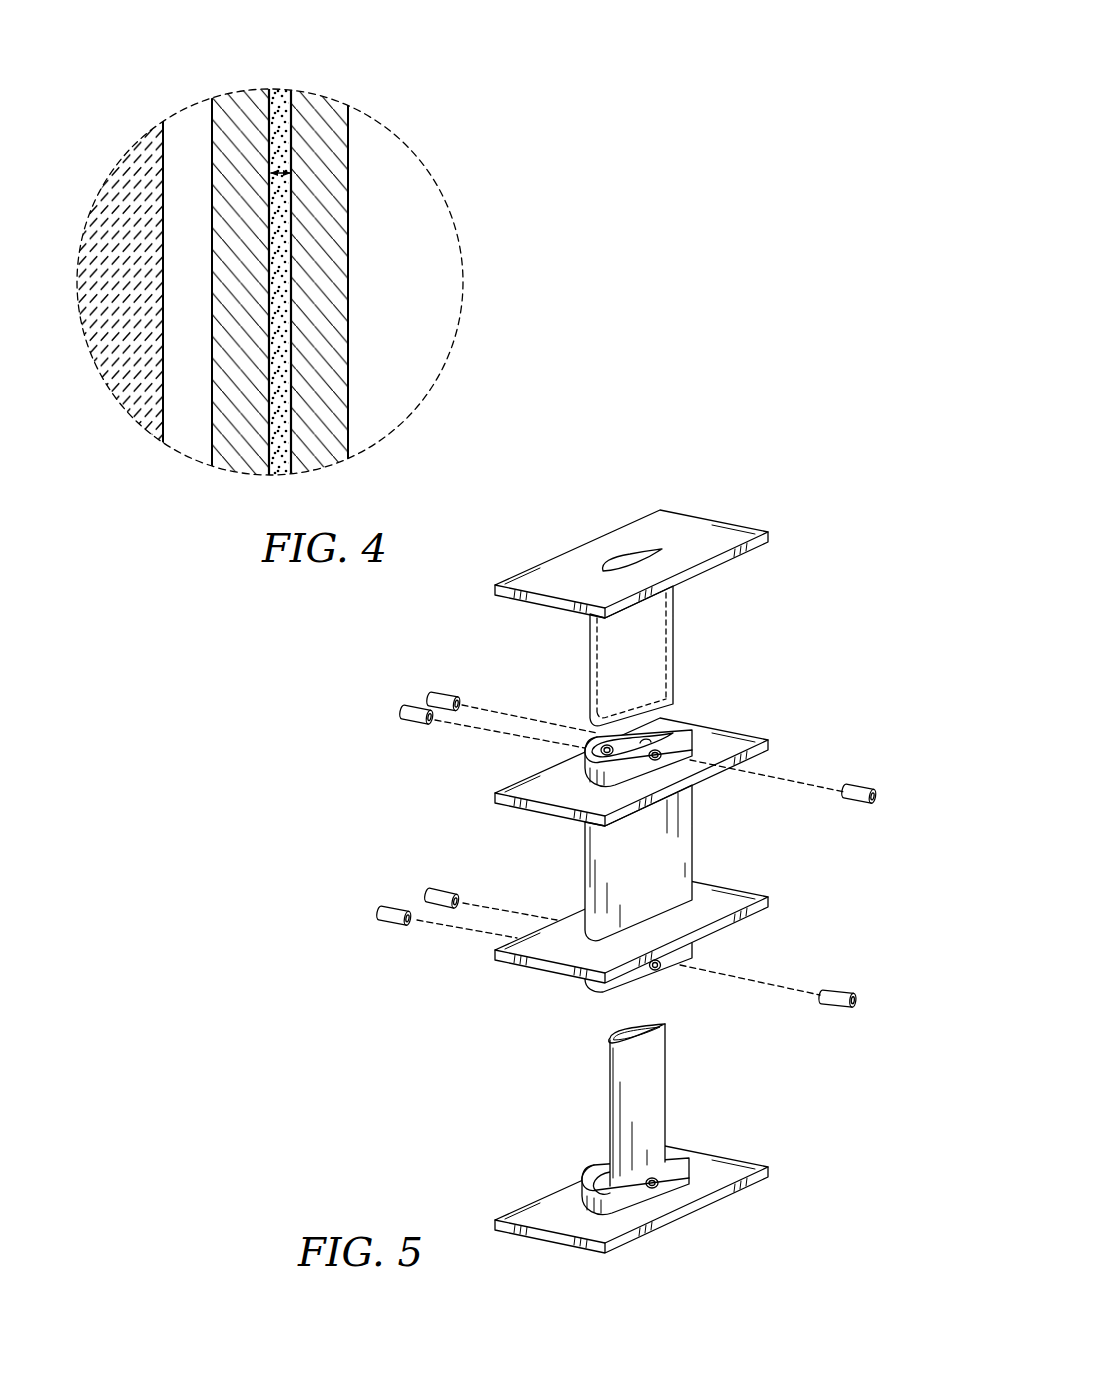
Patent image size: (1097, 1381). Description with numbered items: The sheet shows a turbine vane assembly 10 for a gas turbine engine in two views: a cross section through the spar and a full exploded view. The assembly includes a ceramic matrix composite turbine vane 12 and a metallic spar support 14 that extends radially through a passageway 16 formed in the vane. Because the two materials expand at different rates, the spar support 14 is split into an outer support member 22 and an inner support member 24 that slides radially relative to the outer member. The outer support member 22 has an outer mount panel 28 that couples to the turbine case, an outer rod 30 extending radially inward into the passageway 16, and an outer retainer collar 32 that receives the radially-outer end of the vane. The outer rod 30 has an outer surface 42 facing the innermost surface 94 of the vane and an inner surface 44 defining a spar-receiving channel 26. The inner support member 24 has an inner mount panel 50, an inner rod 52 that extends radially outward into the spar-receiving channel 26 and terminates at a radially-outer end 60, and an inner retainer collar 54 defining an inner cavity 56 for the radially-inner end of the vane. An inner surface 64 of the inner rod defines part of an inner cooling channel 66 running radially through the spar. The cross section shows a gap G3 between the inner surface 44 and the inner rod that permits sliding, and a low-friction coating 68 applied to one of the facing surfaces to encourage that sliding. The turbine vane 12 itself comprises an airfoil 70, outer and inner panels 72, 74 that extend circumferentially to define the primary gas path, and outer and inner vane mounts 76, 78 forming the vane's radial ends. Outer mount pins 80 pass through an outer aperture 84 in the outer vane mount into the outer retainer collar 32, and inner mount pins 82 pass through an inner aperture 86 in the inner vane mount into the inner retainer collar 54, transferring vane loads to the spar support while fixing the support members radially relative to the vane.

In FIG. 4, the turbine vane assembly 10 is at (281, 267).
In FIG. 5, the turbine vane assembly 10 is at (622, 838).
In FIG. 4, the turbine vane 12 is at (90, 222).
In FIG. 5, the turbine vane 12 is at (616, 863).
In FIG. 4, the spar support 14 is at (418, 204).
In FIG. 5, the spar support 14 is at (622, 864).
In FIG. 4, the passageway 16 is at (190, 150).
In FIG. 5, the passageway 16 is at (611, 666).
In FIG. 4, the outer support member 22 is at (243, 97).
In FIG. 5, the outer support member 22 is at (664, 546).
In FIG. 4, the inner support member 24 is at (322, 110).
In FIG. 5, the inner support member 24 is at (666, 1166).
In FIG. 5, the spar-receiving channel 26 is at (665, 648).
In FIG. 5, the outer mount panel 28 is at (677, 530).
In FIG. 4, the outer rod 30 is at (188, 421).
In FIG. 5, the outer rod 30 is at (585, 637).
In FIG. 5, the outer retainer collar 32 is at (690, 588).
In FIG. 4, the outer surface 42 is at (213, 358).
In FIG. 4, the inner surface 44 is at (270, 388).
In FIG. 5, the inner mount panel 50 is at (687, 1208).
In FIG. 4, the inner rod 52 is at (382, 195).
In FIG. 5, the inner rod 52 is at (586, 1086).
In FIG. 5, the inner retainer collar 54 is at (585, 1168).
In FIG. 5, the inner cavity 56 is at (600, 1167).
In FIG. 4, the radially-outer end 60 is at (282, 300).
In FIG. 4, the inner surface 64 is at (348, 328).
In FIG. 4, the inner cooling channel 66 is at (393, 340).
In FIG. 5, the inner cooling channel 66 is at (622, 1030).
In FIG. 4, the low-friction coating 68 is at (282, 93).
In FIG. 5, the airfoil 70 is at (700, 846).
In FIG. 5, the outer panel 72 is at (653, 734).
In FIG. 5, the inner panel 74 is at (672, 958).
In FIG. 5, the outer vane mount 76 is at (648, 714).
In FIG. 5, the inner vane mount 78 is at (679, 985).
In FIG. 5, the outer mount pins 80 is at (398, 708).
In FIG. 5, the inner mount pins 82 is at (370, 913).
In FIG. 5, the outer aperture 84 is at (605, 745).
In FIG. 5, the inner aperture 86 is at (681, 955).
In FIG. 4, the innermost surface 94 is at (172, 322).
In FIG. 4, the gap G3 is at (283, 171).